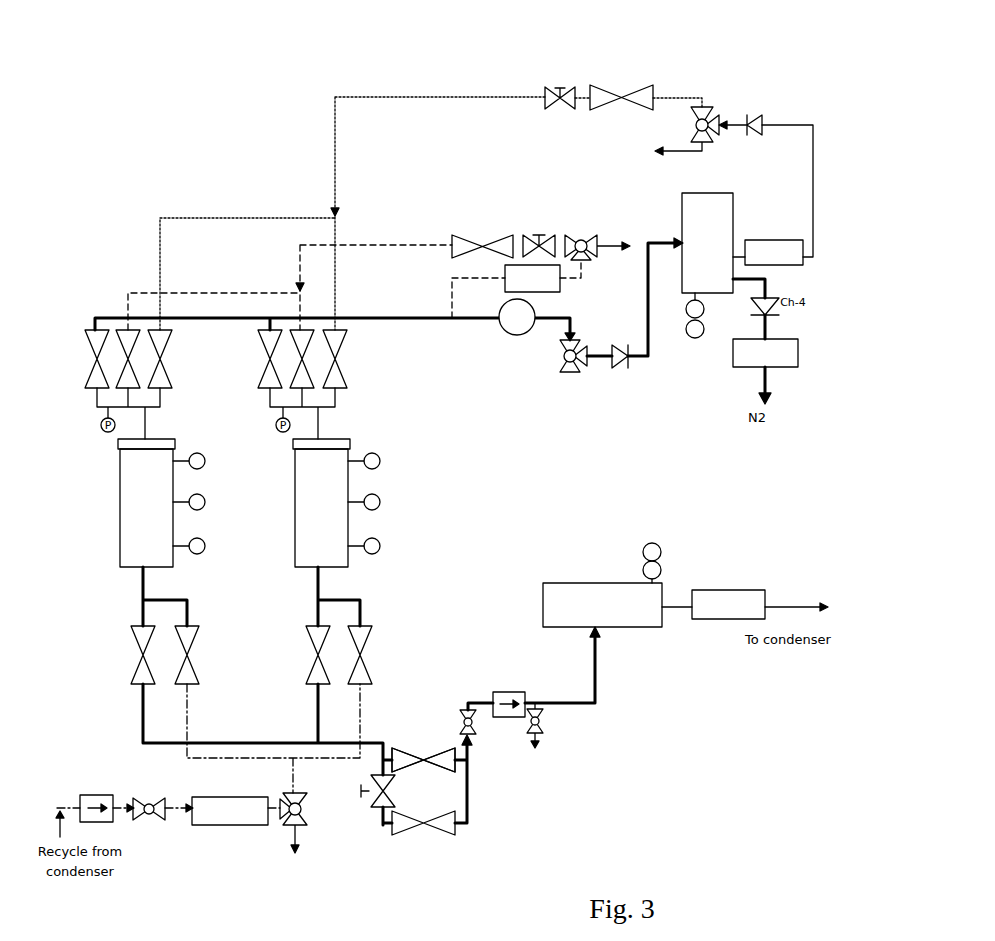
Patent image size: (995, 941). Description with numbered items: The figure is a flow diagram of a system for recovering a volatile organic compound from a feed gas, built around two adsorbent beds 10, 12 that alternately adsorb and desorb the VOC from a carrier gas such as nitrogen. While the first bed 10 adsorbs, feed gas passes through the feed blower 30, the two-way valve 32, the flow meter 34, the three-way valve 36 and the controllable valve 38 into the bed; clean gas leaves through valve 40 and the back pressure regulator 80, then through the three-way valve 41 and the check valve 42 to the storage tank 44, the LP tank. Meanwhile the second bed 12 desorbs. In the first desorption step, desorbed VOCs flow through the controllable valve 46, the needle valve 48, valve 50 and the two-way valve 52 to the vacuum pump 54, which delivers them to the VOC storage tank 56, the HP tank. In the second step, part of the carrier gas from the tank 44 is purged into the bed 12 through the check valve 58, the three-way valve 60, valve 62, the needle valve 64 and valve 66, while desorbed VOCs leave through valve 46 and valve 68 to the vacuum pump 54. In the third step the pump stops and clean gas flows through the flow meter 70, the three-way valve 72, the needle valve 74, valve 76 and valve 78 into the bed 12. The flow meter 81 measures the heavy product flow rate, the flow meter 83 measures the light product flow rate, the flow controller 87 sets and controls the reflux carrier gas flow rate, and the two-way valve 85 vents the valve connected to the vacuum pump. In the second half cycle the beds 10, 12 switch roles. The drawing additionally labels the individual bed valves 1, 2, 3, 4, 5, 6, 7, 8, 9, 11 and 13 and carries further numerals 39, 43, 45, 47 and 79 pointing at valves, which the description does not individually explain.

The valve 1 is at (140, 655).
The valve 2 is at (184, 655).
The valve 3 is at (91, 359).
The valve 4 is at (126, 359).
The valve 5 is at (157, 359).
The valve 6 is at (314, 655).
The valve 7 is at (356, 655).
The valve 8 is at (268, 359).
The valve 9 is at (300, 359).
The first bed 10 is at (95, 540).
The valve 11 is at (423, 818).
The second bed 12 is at (302, 500).
The valve 13 is at (621, 92).
The feed blower 30 is at (113, 822).
The two-way valve 32 is at (163, 818).
The flow meter 34 is at (228, 825).
The three-way valve 36 is at (305, 825).
The controllable valve 38 is at (206, 655).
The valve 1 39 is at (114, 655).
The valve 40 is at (78, 383).
The three-way valve (3w-2) 41 is at (568, 372).
The check valve (Ch-2) 42 is at (615, 374).
The valve 5 43 is at (179, 359).
The storage tank (LP Tank) 44 is at (723, 200).
The valve 4 45 is at (107, 329).
The controllable valve 46 is at (292, 674).
The valve 7 47 is at (376, 636).
The needle valve (N-1) 48 is at (395, 783).
The valve 50 is at (436, 839).
The two-way valve (2w-2) 52 is at (462, 715).
The vacuum pump 54 is at (493, 695).
The VOCs storage tank (HP Tank) 56 is at (630, 618).
The check valve (Ch-3) 58 is at (764, 118).
The three-way valve (3w-3) 60 is at (705, 107).
The valve 62 is at (621, 62).
The needle valve (N-2) 64 is at (545, 88).
The valve 66 is at (238, 448).
The valve 68 is at (398, 755).
The flow meter (FM-LPP) 70 is at (535, 292).
The three-way valve (3w-4) 72 is at (592, 258).
The needle valve (N-3) 74 is at (523, 237).
The valve 76 is at (455, 235).
The valve 78 is at (306, 327).
The valve 8 79 is at (252, 383).
The back pressure regulator (BPR) 80 is at (505, 335).
The flow meter for heavy product (FM-HP) 81 is at (753, 595).
The flow meter for light product (FM-LP) 83 is at (798, 357).
The third two-way valve (2W-3) 85 is at (541, 730).
The flow controller for the reflux step (FC-LR) 87 is at (803, 243).